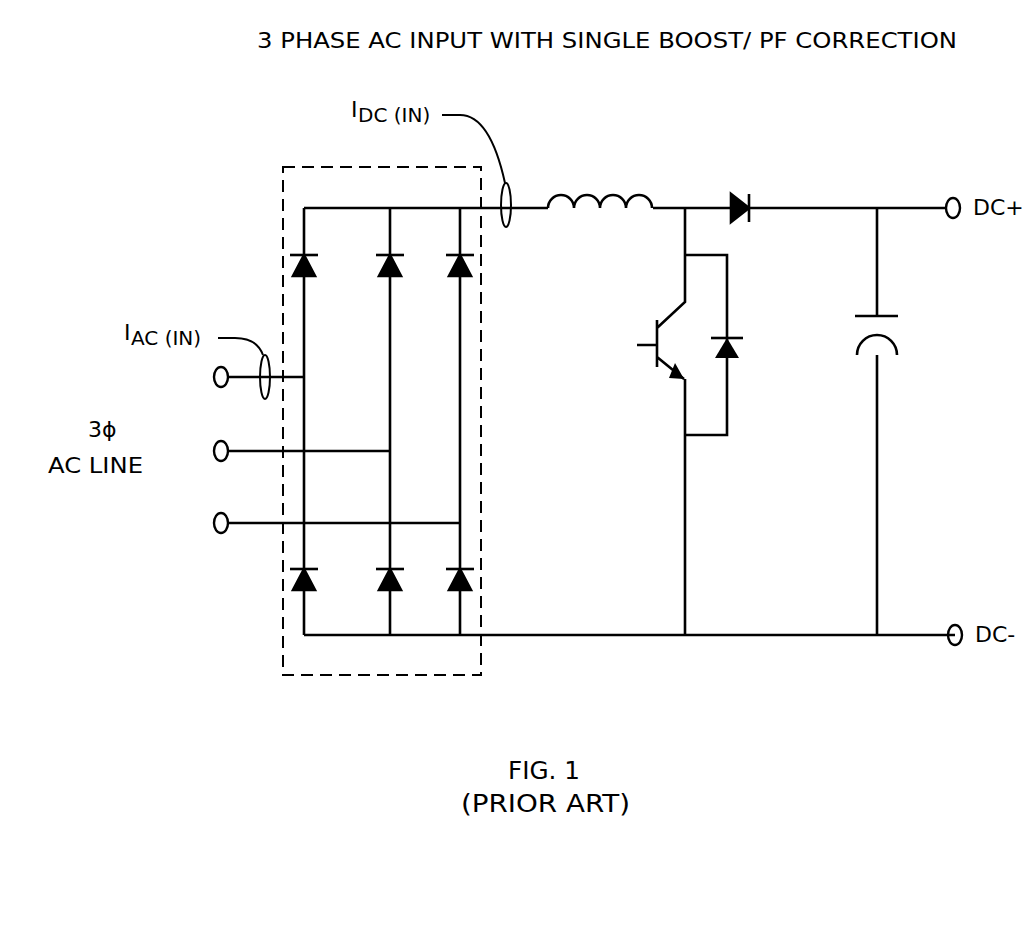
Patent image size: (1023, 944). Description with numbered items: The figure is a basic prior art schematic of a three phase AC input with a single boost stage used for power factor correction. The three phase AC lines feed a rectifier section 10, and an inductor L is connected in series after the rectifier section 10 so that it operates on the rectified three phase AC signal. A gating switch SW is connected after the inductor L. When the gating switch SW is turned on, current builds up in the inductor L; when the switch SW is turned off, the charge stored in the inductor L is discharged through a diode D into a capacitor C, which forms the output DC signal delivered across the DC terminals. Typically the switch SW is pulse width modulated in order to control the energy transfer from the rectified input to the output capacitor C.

The rectifier section 10 is at (283, 650).
The inductor L is at (648, 183).
The boost diode D is at (740, 192).
The gating switch SW is at (704, 421).
The capacitor C is at (889, 421).